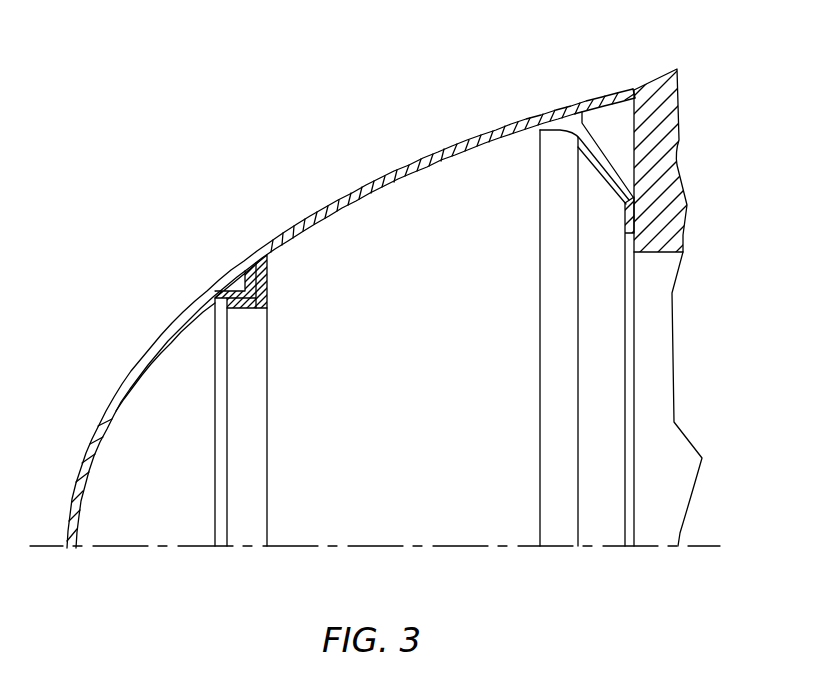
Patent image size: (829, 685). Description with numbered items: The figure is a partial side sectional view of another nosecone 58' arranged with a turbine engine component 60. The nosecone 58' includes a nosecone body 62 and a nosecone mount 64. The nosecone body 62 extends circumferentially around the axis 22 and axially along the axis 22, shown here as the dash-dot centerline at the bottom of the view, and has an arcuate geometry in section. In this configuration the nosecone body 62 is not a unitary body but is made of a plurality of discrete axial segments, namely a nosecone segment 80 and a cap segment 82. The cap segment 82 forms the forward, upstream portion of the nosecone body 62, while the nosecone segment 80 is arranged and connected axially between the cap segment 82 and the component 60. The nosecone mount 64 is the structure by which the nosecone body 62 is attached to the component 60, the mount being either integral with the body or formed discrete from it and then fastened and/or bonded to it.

The nosecone 58' is at (429, 342).
The nosecone body 62 is at (371, 187).
The nosecone segment 80 is at (457, 146).
The cap segment 82 is at (153, 344).
The nosecone mount 64 is at (598, 167).
The component 60 is at (684, 151).
The axis 22 is at (707, 546).